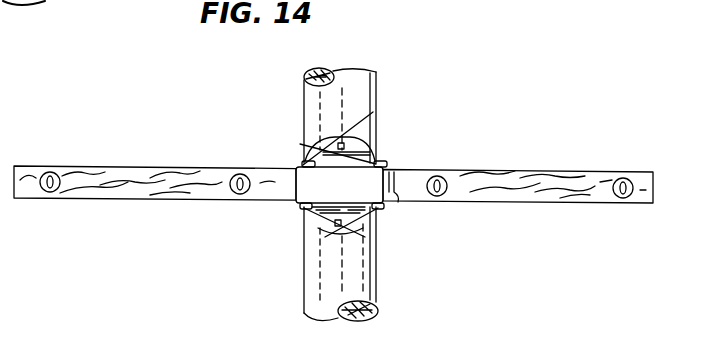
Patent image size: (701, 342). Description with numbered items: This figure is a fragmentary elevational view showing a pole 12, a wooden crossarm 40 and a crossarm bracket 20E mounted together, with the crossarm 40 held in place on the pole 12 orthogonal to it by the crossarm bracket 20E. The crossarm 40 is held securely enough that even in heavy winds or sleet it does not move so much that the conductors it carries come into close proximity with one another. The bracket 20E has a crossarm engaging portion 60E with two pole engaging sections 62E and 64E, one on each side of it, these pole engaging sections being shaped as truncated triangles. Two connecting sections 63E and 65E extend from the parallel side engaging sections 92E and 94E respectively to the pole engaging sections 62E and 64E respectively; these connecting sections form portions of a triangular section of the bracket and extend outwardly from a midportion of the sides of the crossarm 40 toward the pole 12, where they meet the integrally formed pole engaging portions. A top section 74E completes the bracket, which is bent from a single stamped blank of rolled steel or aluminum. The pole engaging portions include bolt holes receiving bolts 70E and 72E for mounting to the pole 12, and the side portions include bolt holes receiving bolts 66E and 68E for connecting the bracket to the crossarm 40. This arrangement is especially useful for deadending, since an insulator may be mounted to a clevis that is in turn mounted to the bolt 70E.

The pole 12 is at (376, 288).
The wooden crossarm 40 is at (528, 182).
The crossarm bracket 20E is at (298, 206).
The crossarm engaging portion 60E is at (398, 202).
The pole engaging section 62E is at (363, 146).
The connecting section 63E is at (300, 144).
The pole engaging section 64E is at (380, 238).
The connecting section 65E is at (318, 222).
The bolt 66E is at (339, 185).
The bolt 68E is at (388, 210).
The bolt 70E is at (373, 112).
The bolt 72E is at (312, 240).
The top section 74E is at (300, 165).
The side engaging section 92E is at (378, 162).
The side engaging section 94E is at (372, 228).